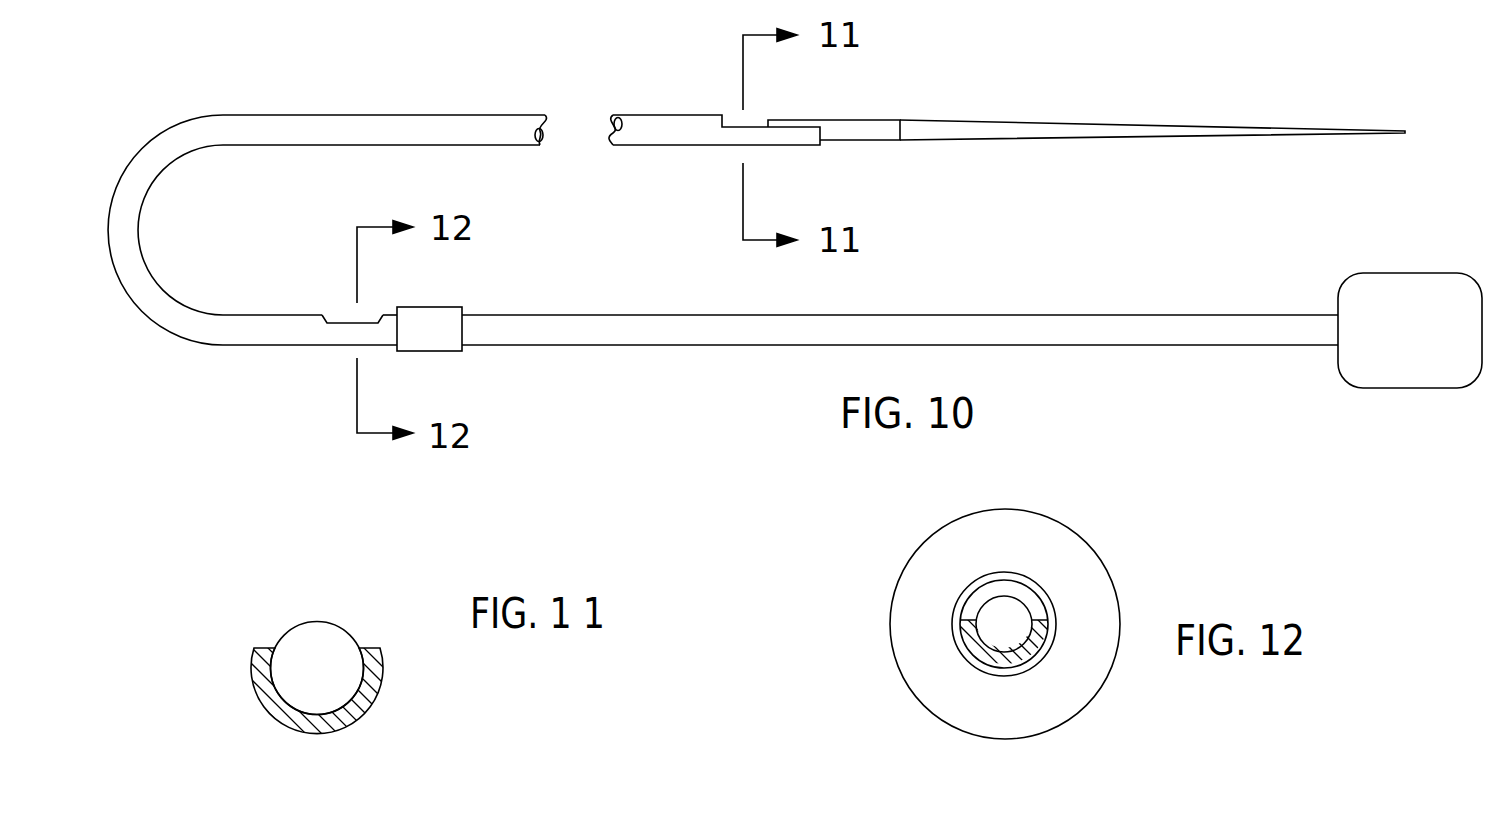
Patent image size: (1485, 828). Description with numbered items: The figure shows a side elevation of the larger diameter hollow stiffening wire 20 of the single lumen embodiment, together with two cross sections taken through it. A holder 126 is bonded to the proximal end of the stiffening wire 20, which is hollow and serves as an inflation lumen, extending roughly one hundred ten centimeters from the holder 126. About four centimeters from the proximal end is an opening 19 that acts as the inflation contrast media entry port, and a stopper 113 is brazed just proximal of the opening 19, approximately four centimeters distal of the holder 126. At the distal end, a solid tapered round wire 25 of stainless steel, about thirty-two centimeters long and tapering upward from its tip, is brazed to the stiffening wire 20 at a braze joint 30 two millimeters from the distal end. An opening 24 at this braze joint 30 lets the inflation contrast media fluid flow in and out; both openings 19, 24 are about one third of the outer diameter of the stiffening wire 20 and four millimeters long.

In FIG. 10, the opening 19 is at (347, 320).
In FIG. 12, the opening 19 is at (977, 607).
In FIG. 10, the hollow stiffening wire 20 is at (607, 345).
In FIG. 11, the hollow stiffening wire 20 is at (378, 683).
In FIG. 10, the opening 24 is at (740, 125).
In FIG. 10, the tapered round wire 25 is at (880, 120).
In FIG. 11, the tapered round wire 25 is at (321, 622).
In FIG. 10, the braze joint 30 is at (793, 126).
In FIG. 10, the stopper 113 is at (447, 307).
In FIG. 12, the stopper 113 is at (952, 625).
In FIG. 10, the holder 126 is at (1420, 388).
In FIG. 12, the holder 126 is at (906, 690).